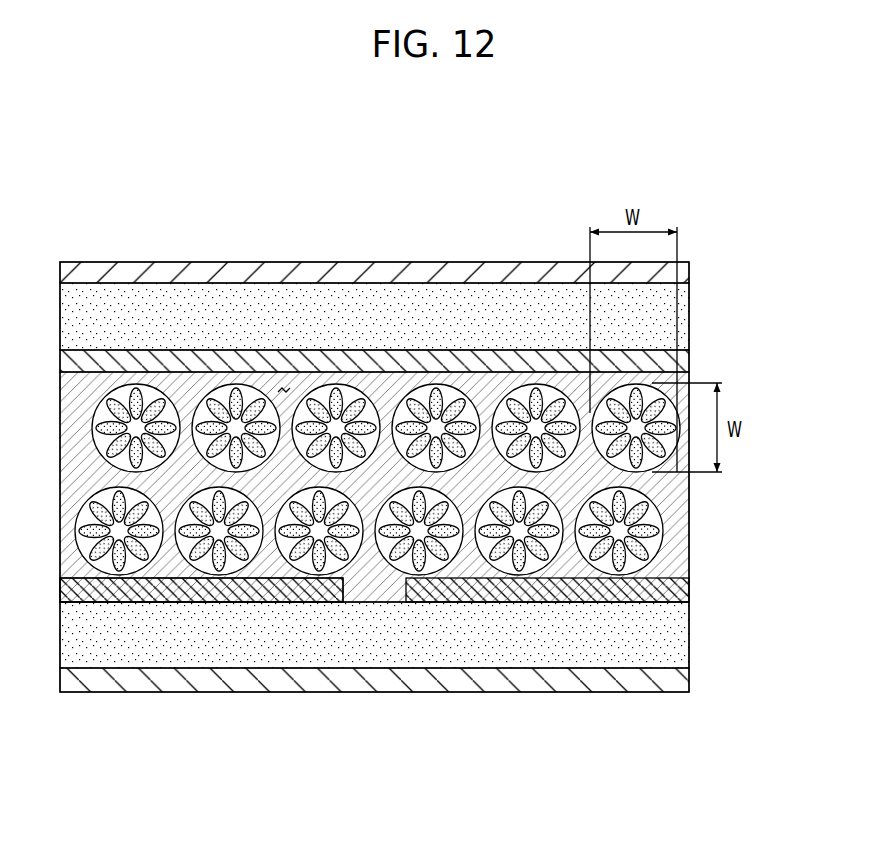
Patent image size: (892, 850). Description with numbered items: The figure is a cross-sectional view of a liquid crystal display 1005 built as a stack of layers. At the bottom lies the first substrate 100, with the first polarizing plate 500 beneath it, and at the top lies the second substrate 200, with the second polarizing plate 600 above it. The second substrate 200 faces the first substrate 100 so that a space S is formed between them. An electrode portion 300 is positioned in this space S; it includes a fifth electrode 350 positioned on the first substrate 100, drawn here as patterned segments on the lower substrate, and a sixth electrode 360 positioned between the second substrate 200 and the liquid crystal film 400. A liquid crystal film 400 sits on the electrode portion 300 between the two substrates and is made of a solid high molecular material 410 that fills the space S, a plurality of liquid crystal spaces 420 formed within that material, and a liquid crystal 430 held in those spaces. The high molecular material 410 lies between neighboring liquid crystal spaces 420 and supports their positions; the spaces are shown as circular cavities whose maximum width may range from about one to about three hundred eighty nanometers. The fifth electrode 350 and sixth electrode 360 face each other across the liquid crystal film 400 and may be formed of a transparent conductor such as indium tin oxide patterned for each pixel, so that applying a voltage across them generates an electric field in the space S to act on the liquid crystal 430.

The display device 1005 is at (401, 168).
The first substrate 100 is at (567, 645).
The second substrate 200 is at (165, 315).
The electrode portion 300 is at (254, 600).
The fifth electrode 350 is at (308, 590).
The sixth electrode 360 is at (537, 363).
The liquid crystal film 400 is at (436, 487).
The high molecular material 410 is at (673, 557).
The liquid crystal space 420 is at (416, 479).
The liquid crystal 430 is at (648, 497).
The first polarizing plate 500 is at (495, 680).
The second polarizing plate 600 is at (457, 272).
The space S is at (283, 392).